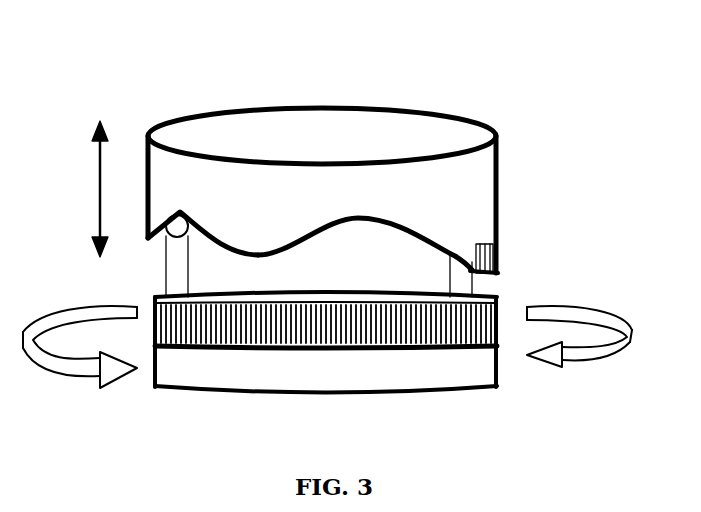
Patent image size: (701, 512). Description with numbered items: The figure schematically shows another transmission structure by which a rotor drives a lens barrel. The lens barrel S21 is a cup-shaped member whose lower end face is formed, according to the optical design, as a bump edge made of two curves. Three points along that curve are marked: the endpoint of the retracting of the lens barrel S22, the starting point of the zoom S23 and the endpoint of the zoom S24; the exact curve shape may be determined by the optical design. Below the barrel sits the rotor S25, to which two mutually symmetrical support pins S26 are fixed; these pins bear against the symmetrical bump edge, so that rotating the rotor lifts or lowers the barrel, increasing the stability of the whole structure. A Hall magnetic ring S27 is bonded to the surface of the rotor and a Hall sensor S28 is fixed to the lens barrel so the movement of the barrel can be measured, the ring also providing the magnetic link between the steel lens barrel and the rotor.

The lens barrel S21 is at (458, 138).
The endpoint of the retracting of the lens barrel S22 is at (180, 211).
The starting point of the zoom S23 is at (255, 253).
The endpoint of the zoom S24 is at (358, 217).
The rotor S25 is at (470, 373).
The support rods S26 is at (460, 270).
The Hall magnetic ring S27 is at (440, 333).
The Hall sensor S28 is at (487, 260).